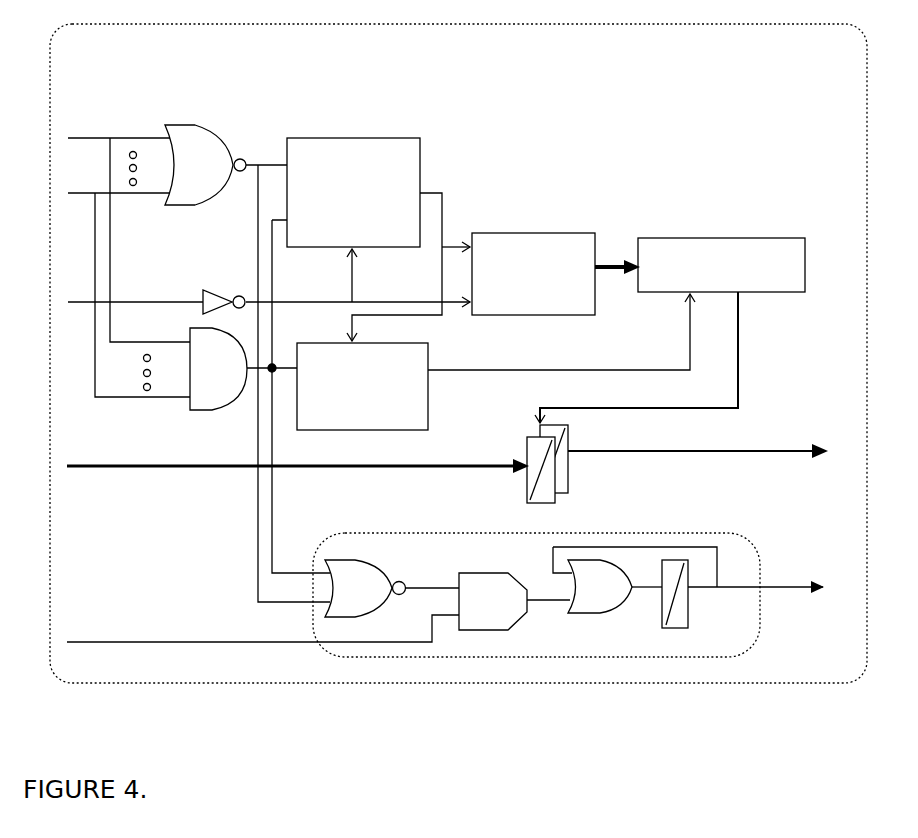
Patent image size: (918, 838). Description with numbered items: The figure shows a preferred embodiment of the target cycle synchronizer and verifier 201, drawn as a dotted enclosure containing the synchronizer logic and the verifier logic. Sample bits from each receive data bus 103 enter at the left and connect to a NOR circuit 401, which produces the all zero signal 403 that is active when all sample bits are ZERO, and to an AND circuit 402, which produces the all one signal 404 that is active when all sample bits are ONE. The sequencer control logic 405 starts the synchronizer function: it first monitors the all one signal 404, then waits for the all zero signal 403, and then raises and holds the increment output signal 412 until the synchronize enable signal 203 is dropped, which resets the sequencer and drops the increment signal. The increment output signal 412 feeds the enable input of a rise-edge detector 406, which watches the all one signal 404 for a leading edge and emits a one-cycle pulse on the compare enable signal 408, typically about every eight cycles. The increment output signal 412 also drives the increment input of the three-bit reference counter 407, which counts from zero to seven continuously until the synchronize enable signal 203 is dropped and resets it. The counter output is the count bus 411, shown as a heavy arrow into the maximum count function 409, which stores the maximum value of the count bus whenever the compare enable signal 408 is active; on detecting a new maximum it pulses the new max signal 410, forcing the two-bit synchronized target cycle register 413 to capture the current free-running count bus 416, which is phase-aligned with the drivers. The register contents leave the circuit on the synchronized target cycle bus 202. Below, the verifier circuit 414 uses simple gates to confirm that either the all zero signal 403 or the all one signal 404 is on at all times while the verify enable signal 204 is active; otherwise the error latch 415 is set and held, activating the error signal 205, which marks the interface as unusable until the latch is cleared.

The receive data bus 103 is at (110, 134).
The NOR circuit 401 is at (190, 122).
The all zero signal 403 is at (262, 140).
The sequencer control logic 405 is at (381, 134).
The increment output signal 412 is at (448, 233).
The three-bit reference counter 407 is at (513, 229).
The count bus 411 is at (612, 258).
The maximum count function 409 is at (725, 232).
The new max signal 410 is at (743, 306).
The compare enable signal 408 is at (620, 362).
The rise-edge detector 406 is at (432, 347).
The synchronize enable signal 203 is at (127, 298).
The AND circuit 402 is at (186, 375).
The all one signal 404 is at (284, 377).
The two-bit synchronized target cycle register 413 is at (527, 433).
The free-running count bus 416 is at (198, 475).
The synchronized target cycle bus 202 is at (767, 438).
The verifier circuit 414 is at (392, 533).
The error latch 415 is at (660, 615).
The verify enable signal 204 is at (235, 636).
The error signal 205 is at (768, 583).
The target cycle synchronizer and verifier 201 is at (427, 692).